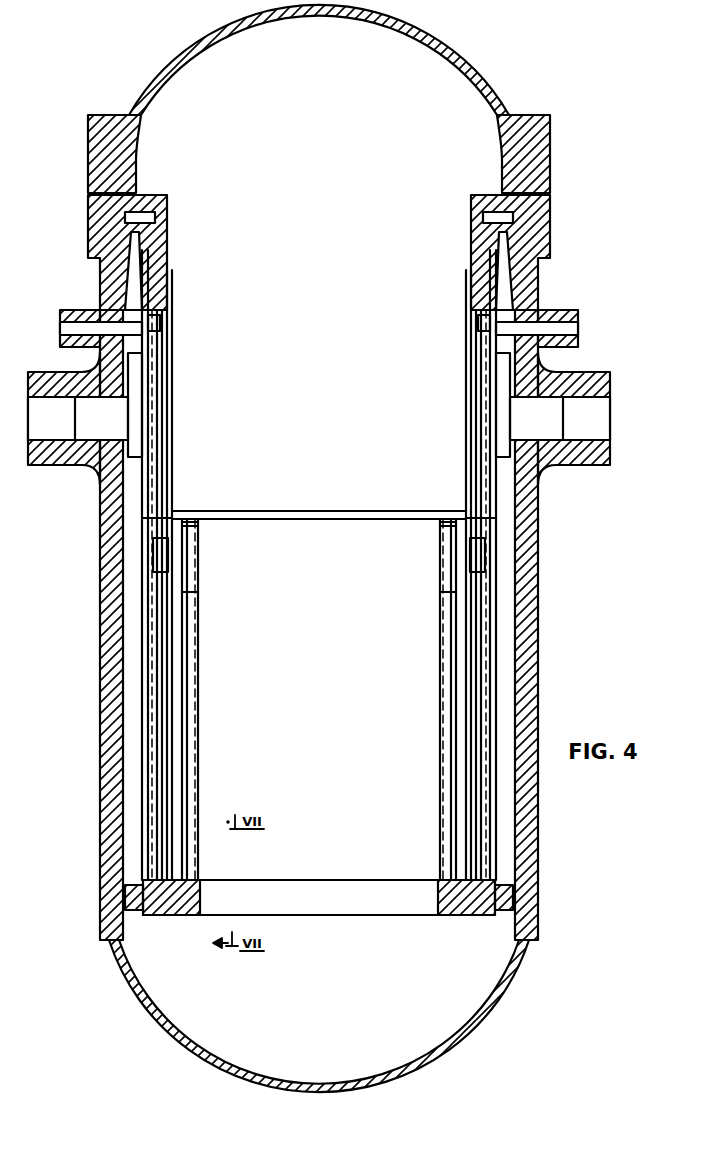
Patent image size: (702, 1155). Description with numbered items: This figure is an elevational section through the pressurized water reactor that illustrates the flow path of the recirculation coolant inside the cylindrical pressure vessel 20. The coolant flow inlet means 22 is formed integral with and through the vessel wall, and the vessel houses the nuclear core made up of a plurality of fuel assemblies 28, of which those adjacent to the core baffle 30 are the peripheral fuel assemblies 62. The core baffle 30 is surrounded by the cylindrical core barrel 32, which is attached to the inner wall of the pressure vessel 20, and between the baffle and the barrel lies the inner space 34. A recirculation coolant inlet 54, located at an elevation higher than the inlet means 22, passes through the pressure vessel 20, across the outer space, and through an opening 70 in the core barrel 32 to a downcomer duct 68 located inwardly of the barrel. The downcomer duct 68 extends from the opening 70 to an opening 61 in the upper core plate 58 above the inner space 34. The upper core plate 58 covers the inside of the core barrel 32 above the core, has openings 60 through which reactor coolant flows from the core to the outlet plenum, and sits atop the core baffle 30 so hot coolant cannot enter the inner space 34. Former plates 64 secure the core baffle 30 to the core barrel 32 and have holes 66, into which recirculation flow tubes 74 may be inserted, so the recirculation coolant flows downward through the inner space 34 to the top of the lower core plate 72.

The pressure vessel 20 is at (95, 150).
The coolant flow inlet means 22 is at (103, 430).
The fuel assemblies 28 is at (205, 690).
The core baffle 30 is at (180, 718).
The core barrel 32 is at (142, 598).
The inner space 34 is at (142, 724).
The recirculation coolant inlet 54 is at (70, 330).
The upper core plate 58 is at (230, 515).
The openings 60 is at (190, 515).
The openings 61 is at (170, 512).
The peripheral fuel assemblies 62 is at (198, 651).
The former plates 64 is at (190, 614).
The holes 66 is at (150, 521).
The downcomer duct 68 is at (172, 462).
The opening 70 is at (160, 327).
The lower core plate 72 is at (168, 918).
The recirculation flow tubes 74 is at (188, 592).